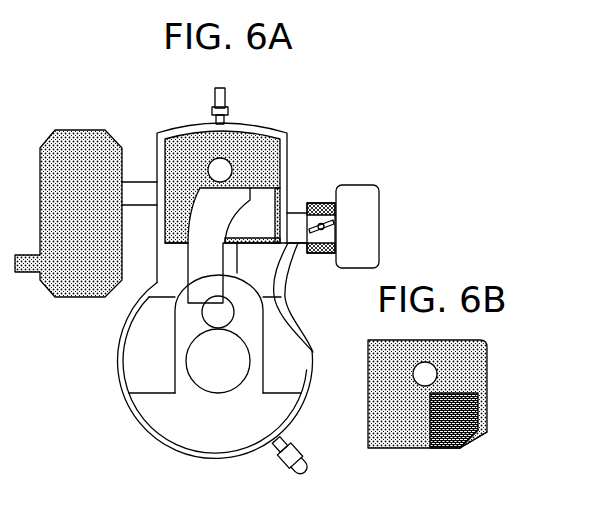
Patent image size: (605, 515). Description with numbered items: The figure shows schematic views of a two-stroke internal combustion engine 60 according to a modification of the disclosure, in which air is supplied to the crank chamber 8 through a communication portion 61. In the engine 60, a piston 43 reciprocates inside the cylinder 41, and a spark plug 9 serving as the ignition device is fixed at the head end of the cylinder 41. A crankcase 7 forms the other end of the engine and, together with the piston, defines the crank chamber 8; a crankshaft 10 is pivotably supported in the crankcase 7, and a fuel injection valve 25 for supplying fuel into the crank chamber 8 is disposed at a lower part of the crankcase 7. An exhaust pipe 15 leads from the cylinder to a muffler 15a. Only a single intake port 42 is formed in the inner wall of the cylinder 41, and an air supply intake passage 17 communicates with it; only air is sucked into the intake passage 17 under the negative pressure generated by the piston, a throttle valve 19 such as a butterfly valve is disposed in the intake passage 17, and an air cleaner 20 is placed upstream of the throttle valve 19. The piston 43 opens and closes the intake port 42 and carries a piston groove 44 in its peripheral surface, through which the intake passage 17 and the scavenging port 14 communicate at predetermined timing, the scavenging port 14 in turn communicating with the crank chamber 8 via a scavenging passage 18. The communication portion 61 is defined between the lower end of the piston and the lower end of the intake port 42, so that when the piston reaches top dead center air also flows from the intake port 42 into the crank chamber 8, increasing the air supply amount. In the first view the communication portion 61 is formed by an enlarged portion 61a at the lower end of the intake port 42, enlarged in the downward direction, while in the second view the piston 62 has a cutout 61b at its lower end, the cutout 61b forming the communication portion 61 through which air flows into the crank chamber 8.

In FIG. 6A, the engine 60 is at (182, 123).
In FIG. 6A, the muffler 15a is at (77, 130).
In FIG. 6A, the exhaust pipe 15 is at (135, 181).
In FIG. 6A, the spark plug 9 is at (229, 102).
In FIG. 6A, the scavenging port 14 is at (242, 195).
In FIG. 6A, the cylinder 41 is at (255, 217).
In FIG. 6A, the piston groove 44 is at (288, 200).
In FIG. 6B, the piston groove 44 is at (432, 398).
In FIG. 6A, the intake passage 17 is at (324, 196).
In FIG. 6A, the air cleaner 20 is at (383, 213).
In FIG. 6A, the throttle valve 19 is at (318, 234).
In FIG. 6A, the intake port 42 is at (288, 223).
In FIG. 6A, the communication portion 61 is at (313, 352).
In FIG. 6B, the communication portion 61 is at (506, 458).
In FIG. 6A, the enlarged portion 61a is at (330, 318).
In FIG. 6B, the cutout 61b is at (480, 441).
In FIG. 6A, the scavenging passage 18 is at (203, 227).
In FIG. 6A, the piston 43 is at (172, 250).
In FIG. 6A, the crank chamber 8 is at (161, 366).
In FIG. 6A, the crankcase 7 is at (124, 402).
In FIG. 6A, the crankshaft 10 is at (218, 363).
In FIG. 6A, the fuel injection valve 25 is at (270, 464).
In FIG. 6B, the piston 62 is at (492, 363).